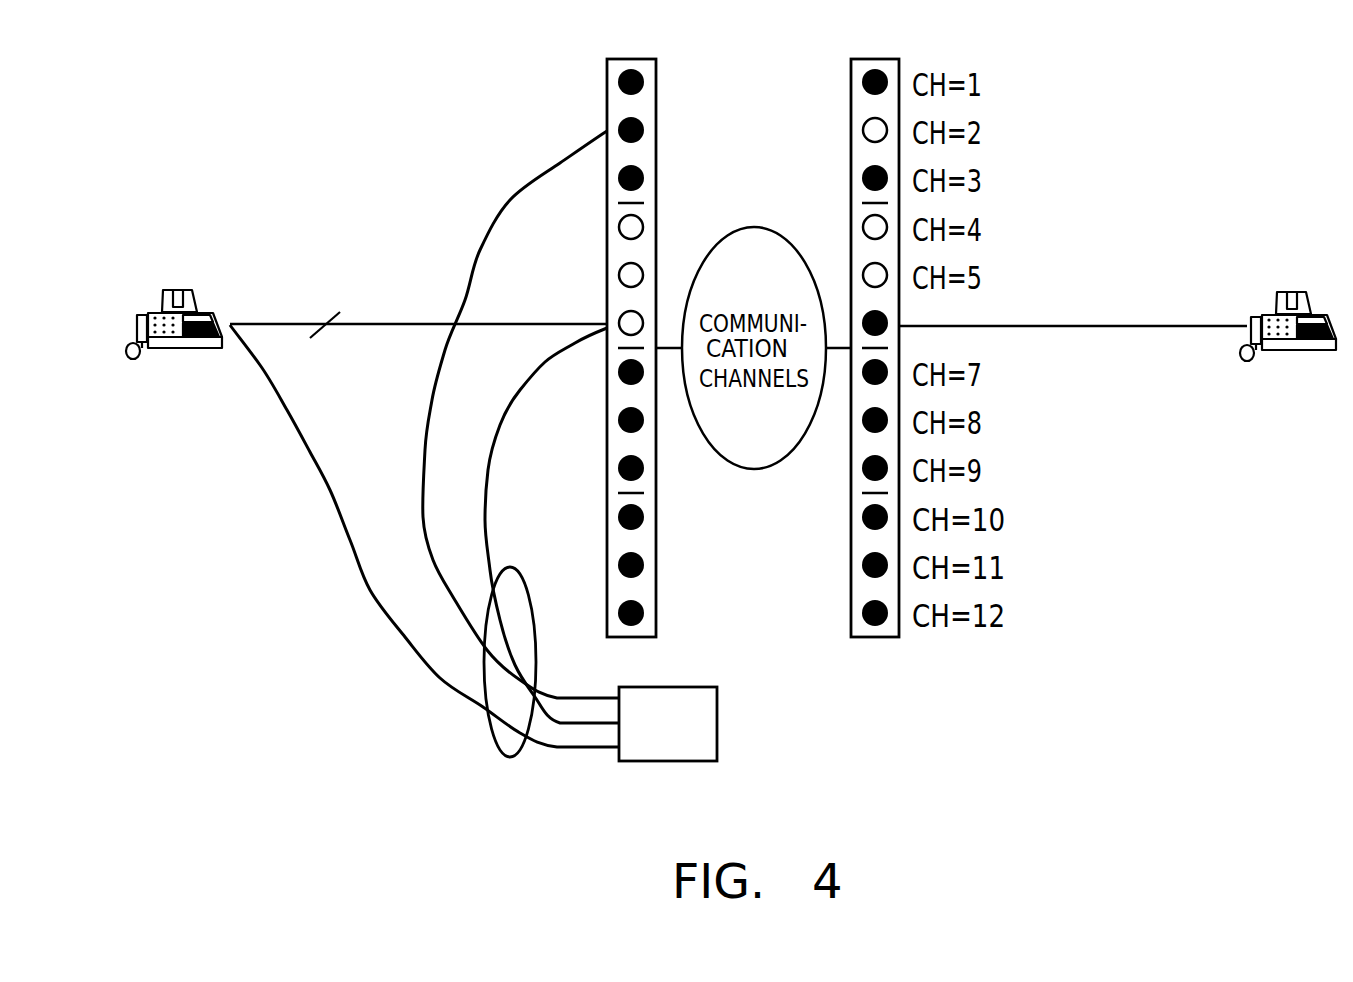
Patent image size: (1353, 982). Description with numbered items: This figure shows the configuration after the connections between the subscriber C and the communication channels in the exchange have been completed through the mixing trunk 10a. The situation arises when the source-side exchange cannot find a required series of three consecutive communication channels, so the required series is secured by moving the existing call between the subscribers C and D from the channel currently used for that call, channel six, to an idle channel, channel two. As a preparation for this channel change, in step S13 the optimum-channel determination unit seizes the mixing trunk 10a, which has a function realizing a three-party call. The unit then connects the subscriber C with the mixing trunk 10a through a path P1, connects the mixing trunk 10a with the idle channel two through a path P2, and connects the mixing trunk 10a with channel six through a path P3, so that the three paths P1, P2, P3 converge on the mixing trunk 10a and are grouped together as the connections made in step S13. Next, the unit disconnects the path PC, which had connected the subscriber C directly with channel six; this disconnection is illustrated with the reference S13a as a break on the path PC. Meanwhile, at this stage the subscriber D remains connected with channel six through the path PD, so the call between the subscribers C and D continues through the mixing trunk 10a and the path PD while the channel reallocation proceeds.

The subscriber C is at (137, 312).
The subscriber D is at (1323, 316).
The path PC is at (412, 324).
The path PD is at (1095, 326).
The disconnection of path PC S13a is at (310, 286).
The path P1 is at (374, 598).
The path P2 is at (422, 517).
The path P3 is at (486, 470).
The step S13 is at (500, 733).
The mixing trunk 10a is at (657, 687).